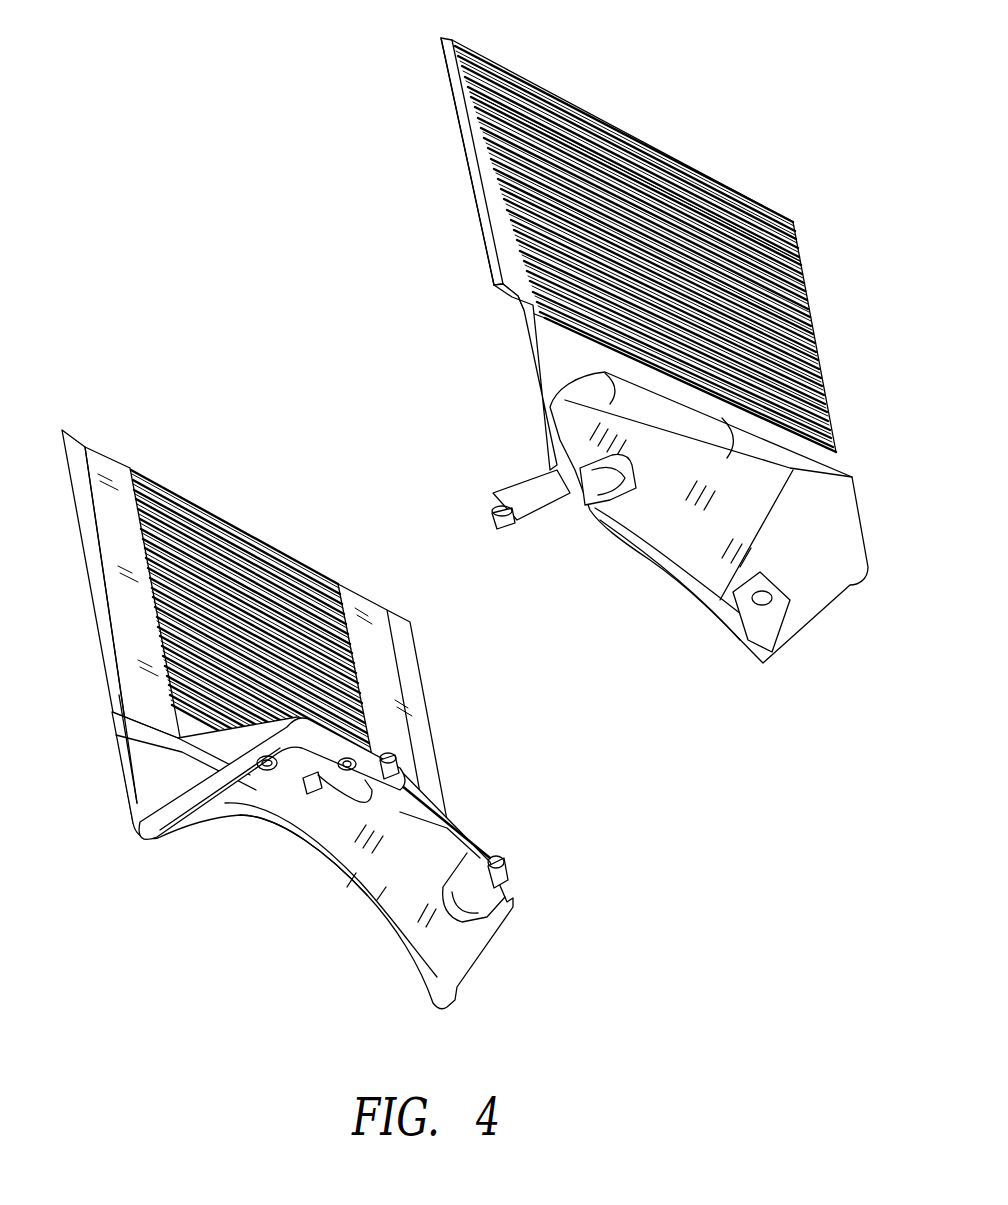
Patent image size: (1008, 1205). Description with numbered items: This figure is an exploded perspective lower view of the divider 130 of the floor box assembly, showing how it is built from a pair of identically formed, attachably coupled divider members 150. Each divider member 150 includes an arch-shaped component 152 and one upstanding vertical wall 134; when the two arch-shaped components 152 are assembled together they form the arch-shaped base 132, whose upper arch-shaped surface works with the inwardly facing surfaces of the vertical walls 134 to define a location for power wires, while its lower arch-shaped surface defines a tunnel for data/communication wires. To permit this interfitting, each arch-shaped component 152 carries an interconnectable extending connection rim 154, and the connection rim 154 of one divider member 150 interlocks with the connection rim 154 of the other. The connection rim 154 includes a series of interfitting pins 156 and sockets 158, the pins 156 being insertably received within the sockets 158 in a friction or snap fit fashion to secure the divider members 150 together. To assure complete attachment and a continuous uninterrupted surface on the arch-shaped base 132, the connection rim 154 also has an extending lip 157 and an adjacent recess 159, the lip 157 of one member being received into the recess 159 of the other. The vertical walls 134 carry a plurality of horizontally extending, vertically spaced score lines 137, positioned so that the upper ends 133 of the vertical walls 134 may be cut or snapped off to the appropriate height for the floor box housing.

The divider 130 is at (800, 662).
The arch-shaped base 132 is at (492, 458).
The upper ends of vertical walls 133 is at (745, 192).
The upstanding vertical walls 134 is at (808, 277).
The score lines 137 is at (444, 62).
The divider member 150 is at (830, 452).
The arch-shaped component 152 is at (580, 510).
The connection rim 154 is at (690, 553).
The pins 156 is at (497, 523).
The lip 157 is at (708, 592).
The sockets 158 is at (742, 627).
The recess 159 is at (460, 842).